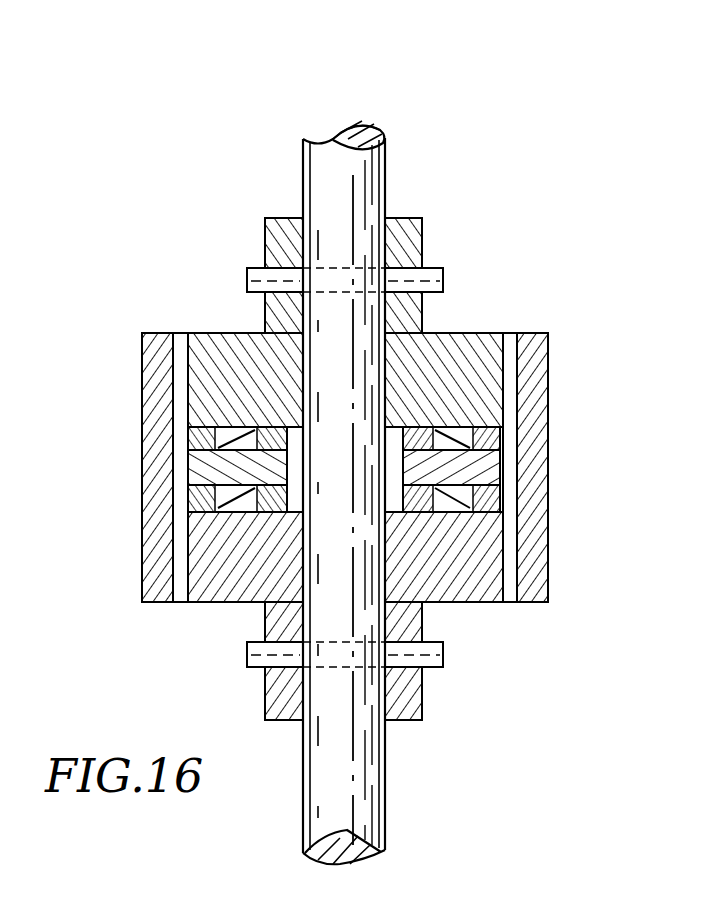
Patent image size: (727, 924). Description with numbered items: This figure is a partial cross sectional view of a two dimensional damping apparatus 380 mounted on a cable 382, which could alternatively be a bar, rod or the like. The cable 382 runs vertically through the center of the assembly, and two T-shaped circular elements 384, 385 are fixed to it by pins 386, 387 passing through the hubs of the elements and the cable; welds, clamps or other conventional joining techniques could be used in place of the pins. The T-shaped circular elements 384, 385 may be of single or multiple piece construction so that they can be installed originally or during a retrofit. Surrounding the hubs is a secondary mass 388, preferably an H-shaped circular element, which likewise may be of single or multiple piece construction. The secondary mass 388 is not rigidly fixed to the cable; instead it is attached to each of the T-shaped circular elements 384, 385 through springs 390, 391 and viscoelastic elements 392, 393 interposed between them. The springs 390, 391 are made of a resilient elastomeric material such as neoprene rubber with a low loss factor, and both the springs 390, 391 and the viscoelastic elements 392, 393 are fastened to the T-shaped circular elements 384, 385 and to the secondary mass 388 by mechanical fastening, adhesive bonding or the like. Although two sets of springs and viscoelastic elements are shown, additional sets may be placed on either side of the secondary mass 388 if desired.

The two dimensional damping apparatus 380 is at (436, 127).
The cable 382 is at (303, 150).
The T-shaped circular element 384 is at (470, 335).
The T-shaped circular element 385 is at (468, 604).
The pin 386 is at (442, 268).
The pin 387 is at (443, 657).
The secondary mass 388 is at (147, 333).
The spring 390 is at (280, 465).
The spring 391 is at (245, 527).
The viscoelastic element 392 is at (262, 433).
The viscoelastic element 393 is at (250, 494).